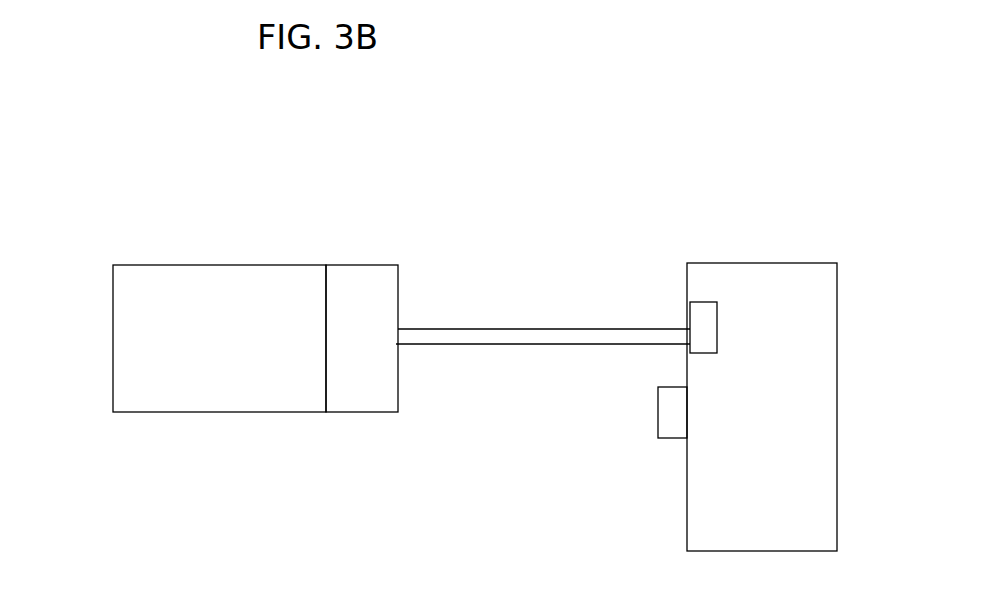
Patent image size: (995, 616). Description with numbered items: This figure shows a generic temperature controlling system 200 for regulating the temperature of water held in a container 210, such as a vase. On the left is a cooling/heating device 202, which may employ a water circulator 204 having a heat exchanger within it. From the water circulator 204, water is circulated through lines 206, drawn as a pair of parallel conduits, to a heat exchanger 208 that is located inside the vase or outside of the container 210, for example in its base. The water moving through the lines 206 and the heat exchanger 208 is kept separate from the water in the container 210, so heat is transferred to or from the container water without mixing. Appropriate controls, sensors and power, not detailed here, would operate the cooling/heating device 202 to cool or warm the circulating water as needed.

The temperature controlling system 200 is at (314, 190).
The cooling/heating device 202 is at (230, 412).
The water circulator 204 is at (360, 412).
The lines 206 is at (597, 327).
The heat exchanger 208 is at (713, 323).
The container 210 is at (737, 262).